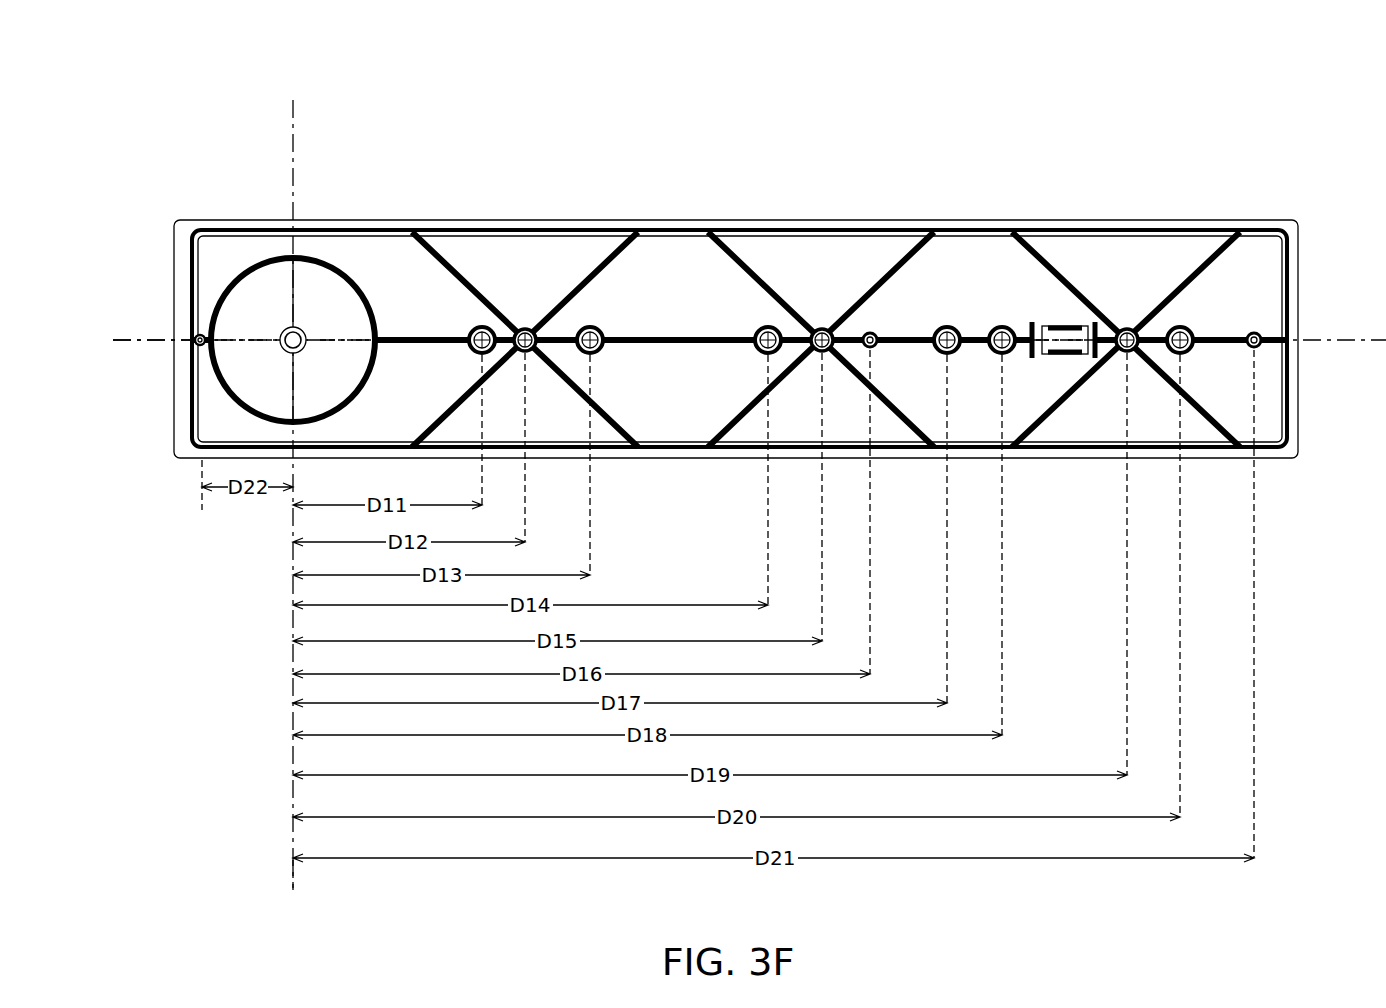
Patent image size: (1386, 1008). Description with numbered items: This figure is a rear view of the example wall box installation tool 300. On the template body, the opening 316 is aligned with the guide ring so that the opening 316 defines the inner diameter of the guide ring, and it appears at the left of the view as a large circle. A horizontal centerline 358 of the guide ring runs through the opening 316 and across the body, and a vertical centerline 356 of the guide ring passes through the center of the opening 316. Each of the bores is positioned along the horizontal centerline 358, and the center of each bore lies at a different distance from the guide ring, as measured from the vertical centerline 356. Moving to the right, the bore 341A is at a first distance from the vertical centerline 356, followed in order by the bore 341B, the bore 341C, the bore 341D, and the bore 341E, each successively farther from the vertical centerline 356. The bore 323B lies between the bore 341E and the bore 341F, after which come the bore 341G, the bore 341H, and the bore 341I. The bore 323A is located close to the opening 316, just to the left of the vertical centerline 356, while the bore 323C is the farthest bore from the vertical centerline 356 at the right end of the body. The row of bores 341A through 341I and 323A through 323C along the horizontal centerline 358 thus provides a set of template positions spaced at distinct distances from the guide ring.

The wall box installation tool 300 is at (90, 112).
The opening 316 is at (330, 262).
The bore 323A is at (200, 334).
The bore 323B is at (870, 332).
The bore 323C is at (1254, 332).
The bore 341A is at (482, 326).
The bore 341B is at (526, 328).
The bore 341C is at (590, 326).
The bore 341D is at (768, 326).
The bore 341E is at (822, 328).
The bore 341F is at (947, 326).
The bore 341G is at (1003, 326).
The bore 341H is at (1127, 328).
The bore 341I is at (1180, 326).
The vertical centerline 356 is at (295, 882).
The horizontal centerline 358 is at (137, 340).